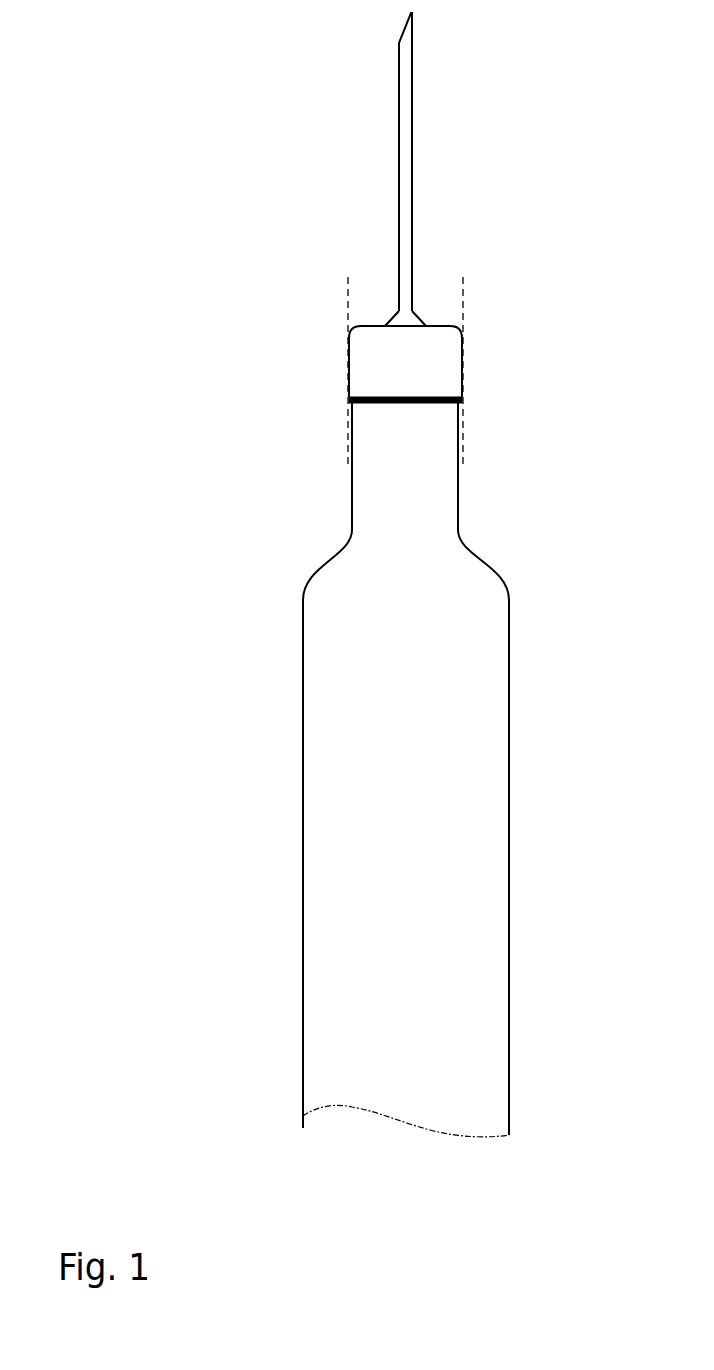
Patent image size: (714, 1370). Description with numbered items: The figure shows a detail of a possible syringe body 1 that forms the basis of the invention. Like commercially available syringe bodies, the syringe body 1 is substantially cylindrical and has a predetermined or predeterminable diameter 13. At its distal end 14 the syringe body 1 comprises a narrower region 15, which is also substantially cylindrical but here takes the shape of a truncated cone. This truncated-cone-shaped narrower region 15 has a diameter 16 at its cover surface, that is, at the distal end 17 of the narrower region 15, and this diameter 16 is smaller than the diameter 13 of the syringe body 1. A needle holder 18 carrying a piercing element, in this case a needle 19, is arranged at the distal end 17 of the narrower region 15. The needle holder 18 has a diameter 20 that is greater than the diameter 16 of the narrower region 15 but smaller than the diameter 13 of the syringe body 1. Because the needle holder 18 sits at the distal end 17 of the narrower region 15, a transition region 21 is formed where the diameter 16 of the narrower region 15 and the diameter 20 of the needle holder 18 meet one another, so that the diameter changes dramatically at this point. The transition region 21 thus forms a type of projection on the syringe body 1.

The syringe body 1 is at (495, 685).
The diameter 13 is at (245, 893).
The distal end 14 is at (250, 381).
The narrower region 15 is at (250, 453).
The diameter 16 is at (353, 428).
The distal end 17 is at (293, 381).
The needle holder 18 is at (445, 345).
The needle 19 is at (407, 190).
The diameter 20 is at (493, 381).
The transition region 21 is at (458, 405).